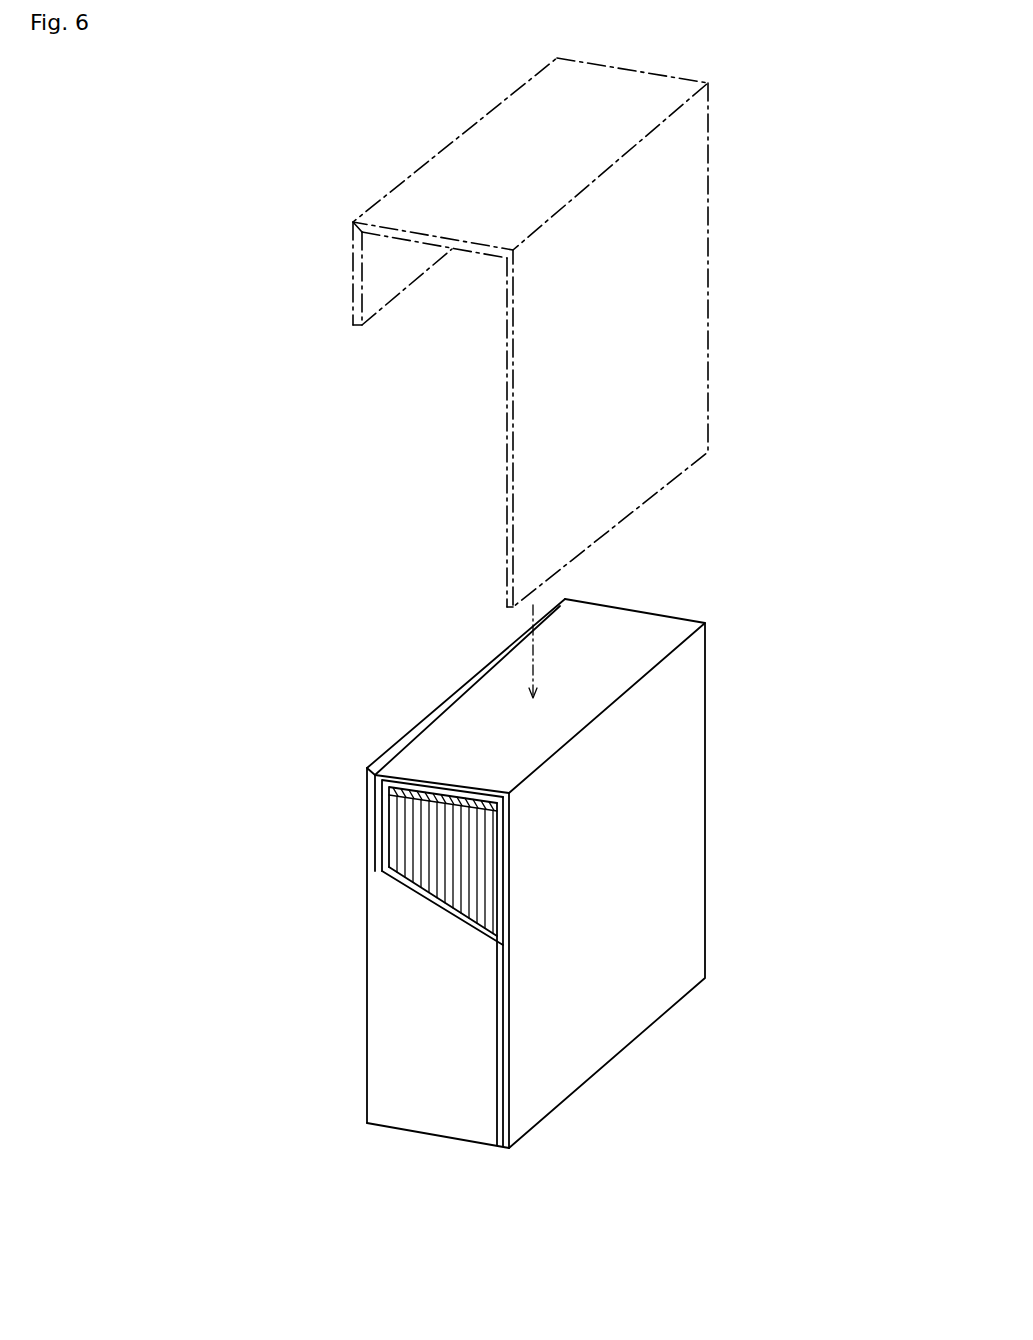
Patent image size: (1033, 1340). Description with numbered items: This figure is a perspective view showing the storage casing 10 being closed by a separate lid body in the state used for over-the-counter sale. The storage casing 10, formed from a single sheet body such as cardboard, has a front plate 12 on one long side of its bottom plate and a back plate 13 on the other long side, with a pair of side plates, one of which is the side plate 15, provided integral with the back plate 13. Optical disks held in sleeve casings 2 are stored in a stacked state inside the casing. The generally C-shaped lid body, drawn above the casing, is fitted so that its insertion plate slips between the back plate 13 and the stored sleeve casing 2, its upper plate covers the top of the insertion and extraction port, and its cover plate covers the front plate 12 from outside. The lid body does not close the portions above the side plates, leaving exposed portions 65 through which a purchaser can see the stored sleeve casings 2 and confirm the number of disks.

The sleeve casing 2 is at (497, 790).
The storage casing 10 is at (554, 898).
The front plate 12 is at (505, 1150).
The back plate 13 is at (438, 708).
The side plate 15 is at (452, 1125).
The exposed portions 65 is at (408, 843).